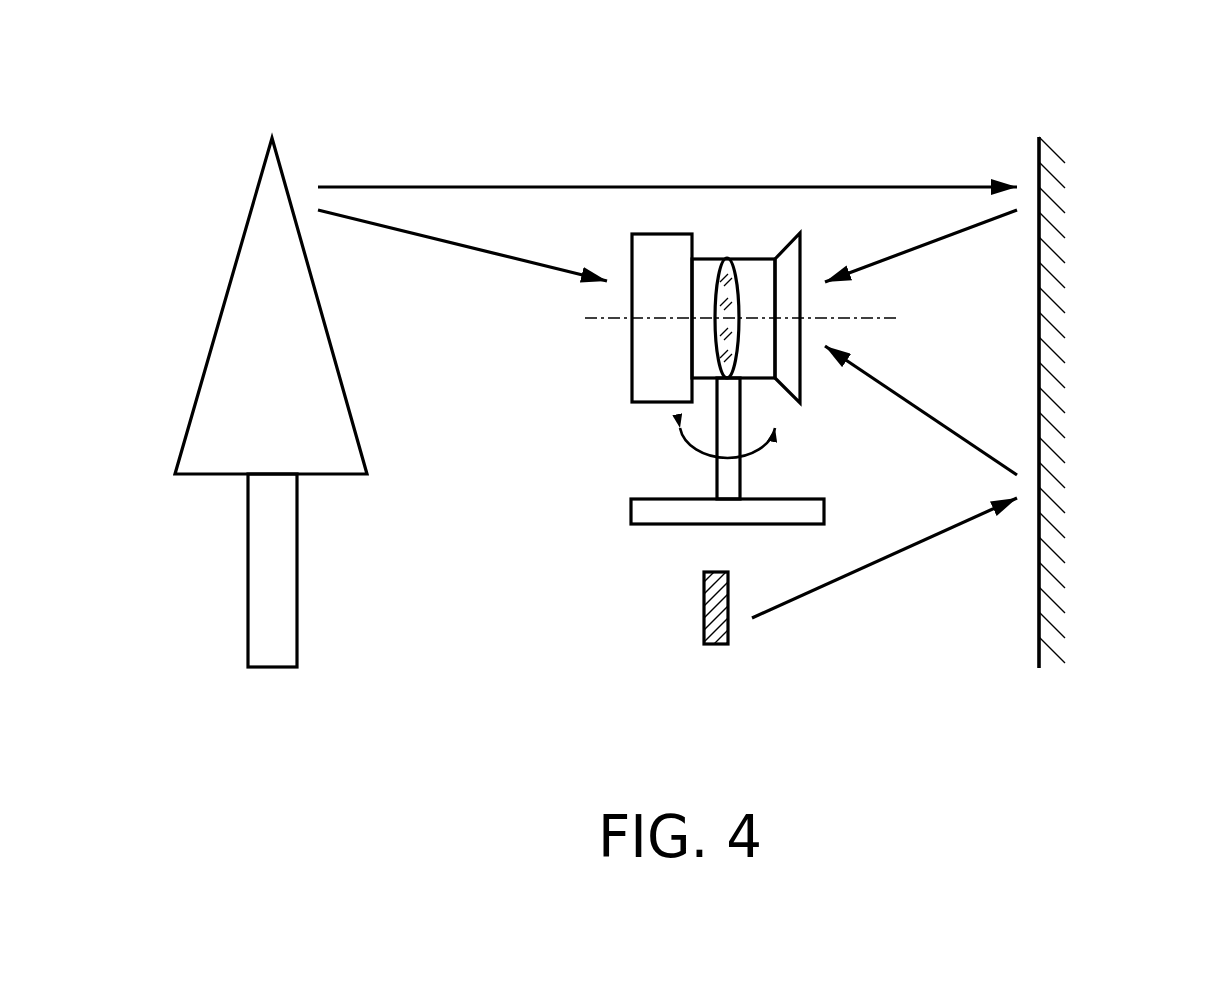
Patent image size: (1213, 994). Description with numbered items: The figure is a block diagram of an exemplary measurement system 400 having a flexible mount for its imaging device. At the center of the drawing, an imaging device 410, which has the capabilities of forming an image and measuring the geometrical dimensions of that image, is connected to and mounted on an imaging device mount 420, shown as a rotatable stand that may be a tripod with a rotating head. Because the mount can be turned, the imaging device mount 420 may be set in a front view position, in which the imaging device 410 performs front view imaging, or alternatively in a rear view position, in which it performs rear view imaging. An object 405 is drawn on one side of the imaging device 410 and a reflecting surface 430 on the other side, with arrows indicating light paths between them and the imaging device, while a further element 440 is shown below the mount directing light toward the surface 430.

The measurement system 400 is at (255, 60).
The object (tree) 405 is at (318, 330).
The imaging device 410 is at (643, 259).
The imaging device mount 420 is at (798, 513).
The wall / surface 430 is at (1039, 330).
The light source 440 is at (717, 596).